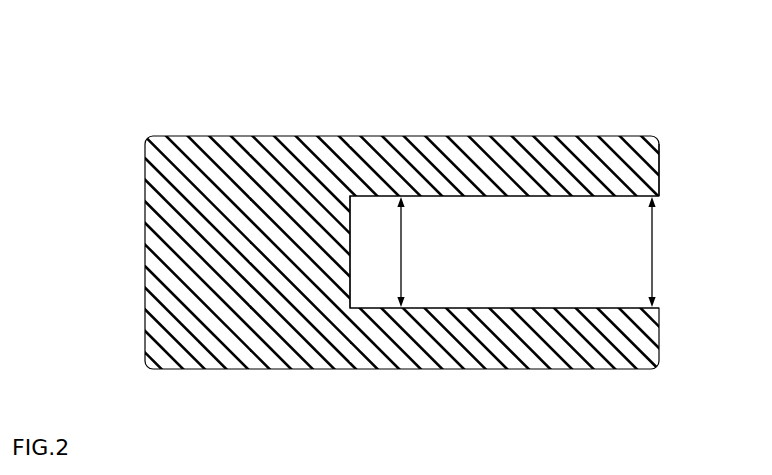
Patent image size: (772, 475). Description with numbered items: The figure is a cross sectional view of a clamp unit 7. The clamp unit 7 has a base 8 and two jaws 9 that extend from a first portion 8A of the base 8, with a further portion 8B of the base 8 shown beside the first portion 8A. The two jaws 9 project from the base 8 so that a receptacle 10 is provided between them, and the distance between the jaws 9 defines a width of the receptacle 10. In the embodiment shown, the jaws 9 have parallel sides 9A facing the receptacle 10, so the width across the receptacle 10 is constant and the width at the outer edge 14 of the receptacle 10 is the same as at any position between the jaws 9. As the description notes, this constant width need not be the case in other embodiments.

The clamp unit 7 is at (386, 197).
The base 8 is at (386, 197).
The first portion 8A is at (300, 106).
The second solid portion 8B is at (184, 107).
The jaws 9 is at (490, 137).
The parallel sides 9A is at (569, 298).
The receptacle 10 is at (534, 260).
The outer edge 14 is at (668, 189).